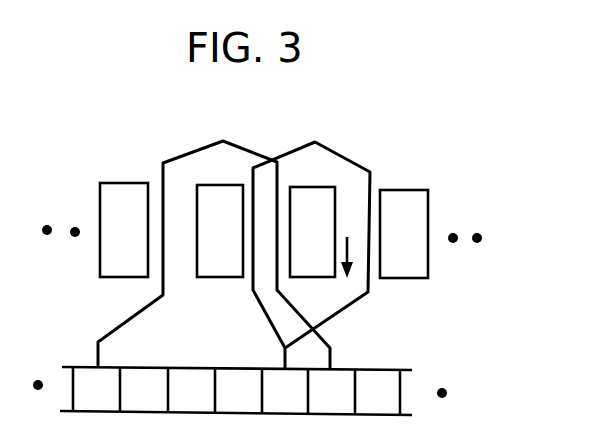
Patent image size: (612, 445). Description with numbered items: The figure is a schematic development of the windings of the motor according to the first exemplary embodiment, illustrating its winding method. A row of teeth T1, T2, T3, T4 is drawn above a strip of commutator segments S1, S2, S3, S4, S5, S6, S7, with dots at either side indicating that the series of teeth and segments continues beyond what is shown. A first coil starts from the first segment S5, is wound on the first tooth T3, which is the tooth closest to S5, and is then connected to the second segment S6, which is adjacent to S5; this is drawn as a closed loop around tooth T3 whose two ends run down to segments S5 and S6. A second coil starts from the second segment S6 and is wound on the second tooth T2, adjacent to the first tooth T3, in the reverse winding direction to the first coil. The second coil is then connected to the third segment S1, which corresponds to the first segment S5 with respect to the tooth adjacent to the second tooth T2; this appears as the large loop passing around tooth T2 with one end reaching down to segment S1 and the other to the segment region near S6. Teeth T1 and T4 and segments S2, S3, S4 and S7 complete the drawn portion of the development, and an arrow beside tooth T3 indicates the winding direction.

The element T1 is at (124, 230).
The second tooth T2 is at (220, 231).
The first tooth T3 is at (312, 232).
The element T4 is at (404, 234).
The third segment S1 is at (95, 393).
The slot S2 is at (141, 393).
The slot S3 is at (188, 394).
The slot S4 is at (235, 394).
The first segment S5 is at (282, 394).
The second segment S6 is at (328, 395).
The slot S7 is at (375, 395).